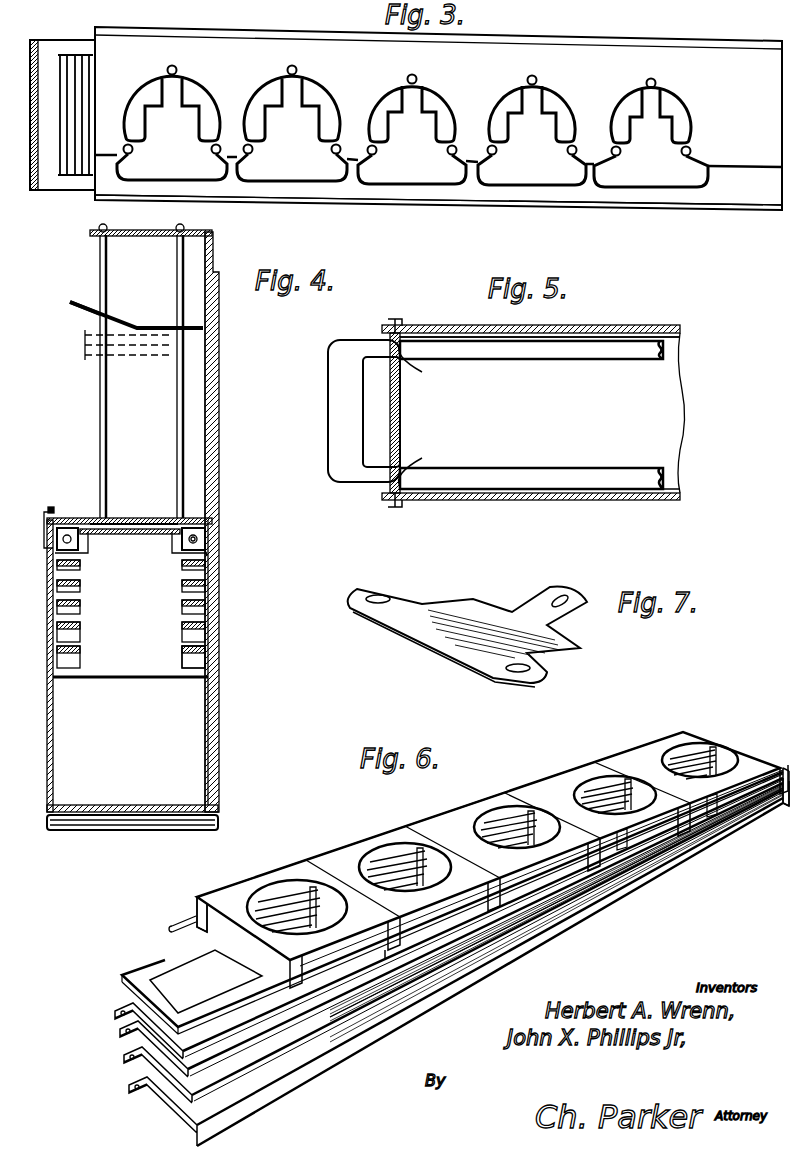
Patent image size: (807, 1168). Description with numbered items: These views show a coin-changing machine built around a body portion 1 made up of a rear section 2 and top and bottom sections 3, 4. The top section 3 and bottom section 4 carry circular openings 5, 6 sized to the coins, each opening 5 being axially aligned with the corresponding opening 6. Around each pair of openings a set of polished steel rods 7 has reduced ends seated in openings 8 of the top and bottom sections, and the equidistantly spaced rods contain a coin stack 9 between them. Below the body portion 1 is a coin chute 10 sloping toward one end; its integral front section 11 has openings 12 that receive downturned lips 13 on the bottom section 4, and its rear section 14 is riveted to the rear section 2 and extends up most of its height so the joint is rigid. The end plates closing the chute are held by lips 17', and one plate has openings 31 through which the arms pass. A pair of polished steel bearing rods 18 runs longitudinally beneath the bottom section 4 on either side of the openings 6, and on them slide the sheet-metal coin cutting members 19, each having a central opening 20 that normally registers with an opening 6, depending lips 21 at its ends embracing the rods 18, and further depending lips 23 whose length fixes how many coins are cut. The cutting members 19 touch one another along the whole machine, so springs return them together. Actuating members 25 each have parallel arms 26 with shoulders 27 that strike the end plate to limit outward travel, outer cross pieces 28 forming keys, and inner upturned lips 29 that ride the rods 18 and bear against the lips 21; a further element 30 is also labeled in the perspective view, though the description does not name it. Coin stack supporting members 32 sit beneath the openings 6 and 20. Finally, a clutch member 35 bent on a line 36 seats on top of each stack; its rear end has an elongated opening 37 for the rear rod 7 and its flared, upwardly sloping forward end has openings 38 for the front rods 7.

In FIG. 4, the body portion 1 is at (200, 405).
In FIG. 4, the rear section 2 is at (206, 440).
In FIG. 4, the top section 3 is at (214, 232).
In FIG. 3, the bottom section 4 is at (391, 206).
In FIG. 4, the bottom section 4 is at (62, 518).
In FIG. 3, the opening 5 is at (207, 95).
In FIG. 4, the opening 5 is at (114, 225).
In FIG. 4, the opening 6 is at (118, 523).
In FIG. 3, the rod 7 is at (174, 66).
In FIG. 4, the rod 7 is at (100, 398).
In FIG. 4, the opening 8 is at (176, 228).
In FIG. 4, the coin stack 9 is at (85, 341).
In FIG. 4, the coin chute 10 is at (129, 809).
In FIG. 6, the coin chute 10 is at (435, 818).
In FIG. 3, the front section 11 is at (447, 207).
In FIG. 4, the front section 11 is at (54, 742).
In FIG. 4, the opening 12 is at (50, 507).
In FIG. 4, the downturned lip 13 is at (44, 530).
In FIG. 3, the rear section 14 is at (601, 40).
In FIG. 4, the rear section 14 is at (210, 733).
In FIG. 5, the rear section 14 is at (466, 329).
In FIG. 5, the lip 17' is at (410, 413).
In FIG. 4, the bearing rod 18 is at (78, 546).
In FIG. 6, the bearing rod 18 is at (175, 929).
In FIG. 4, the coin cutting member 19 is at (132, 538).
In FIG. 6, the coin cutting member 19 is at (290, 868).
In FIG. 4, the opening 20 is at (155, 527).
In FIG. 6, the opening 20 is at (285, 888).
In FIG. 4, the depending lip 21 is at (197, 543).
In FIG. 6, the depending lip 21 is at (196, 900).
In FIG. 6, the depending lip 23 is at (340, 900).
In FIG. 5, the actuating member 25 is at (510, 367).
In FIG. 6, the actuating member 25 is at (436, 1023).
In FIG. 4, the arm 26 is at (183, 626).
In FIG. 5, the arm 26 is at (580, 350).
In FIG. 6, the arm 26 is at (520, 815).
In FIG. 5, the shoulder 27 is at (422, 415).
In FIG. 6, the shoulder 27 is at (325, 1090).
In FIG. 3, the cross piece 28 is at (50, 58).
In FIG. 5, the cross piece 28 is at (337, 422).
In FIG. 6, the cross piece 28 is at (150, 1000).
In FIG. 6, the upturned lip 29 is at (786, 805).
In FIG. 6, the leg 30 is at (488, 896).
In FIG. 4, the opening 31 is at (183, 668).
In FIG. 4, the coin stack supporting member 32 is at (207, 554).
In FIG. 3, the clutch member 35 is at (412, 167).
In FIG. 4, the clutch member 35 is at (130, 320).
In FIG. 7, the clutch member 35 is at (462, 599).
In FIG. 3, the bend line 36 is at (174, 112).
In FIG. 4, the bend line 36 is at (145, 333).
In FIG. 7, the bend line 36 is at (568, 660).
In FIG. 4, the opening 37 is at (185, 328).
In FIG. 7, the opening 37 is at (560, 595).
In FIG. 4, the opening 38 is at (95, 309).
In FIG. 7, the opening 38 is at (378, 594).